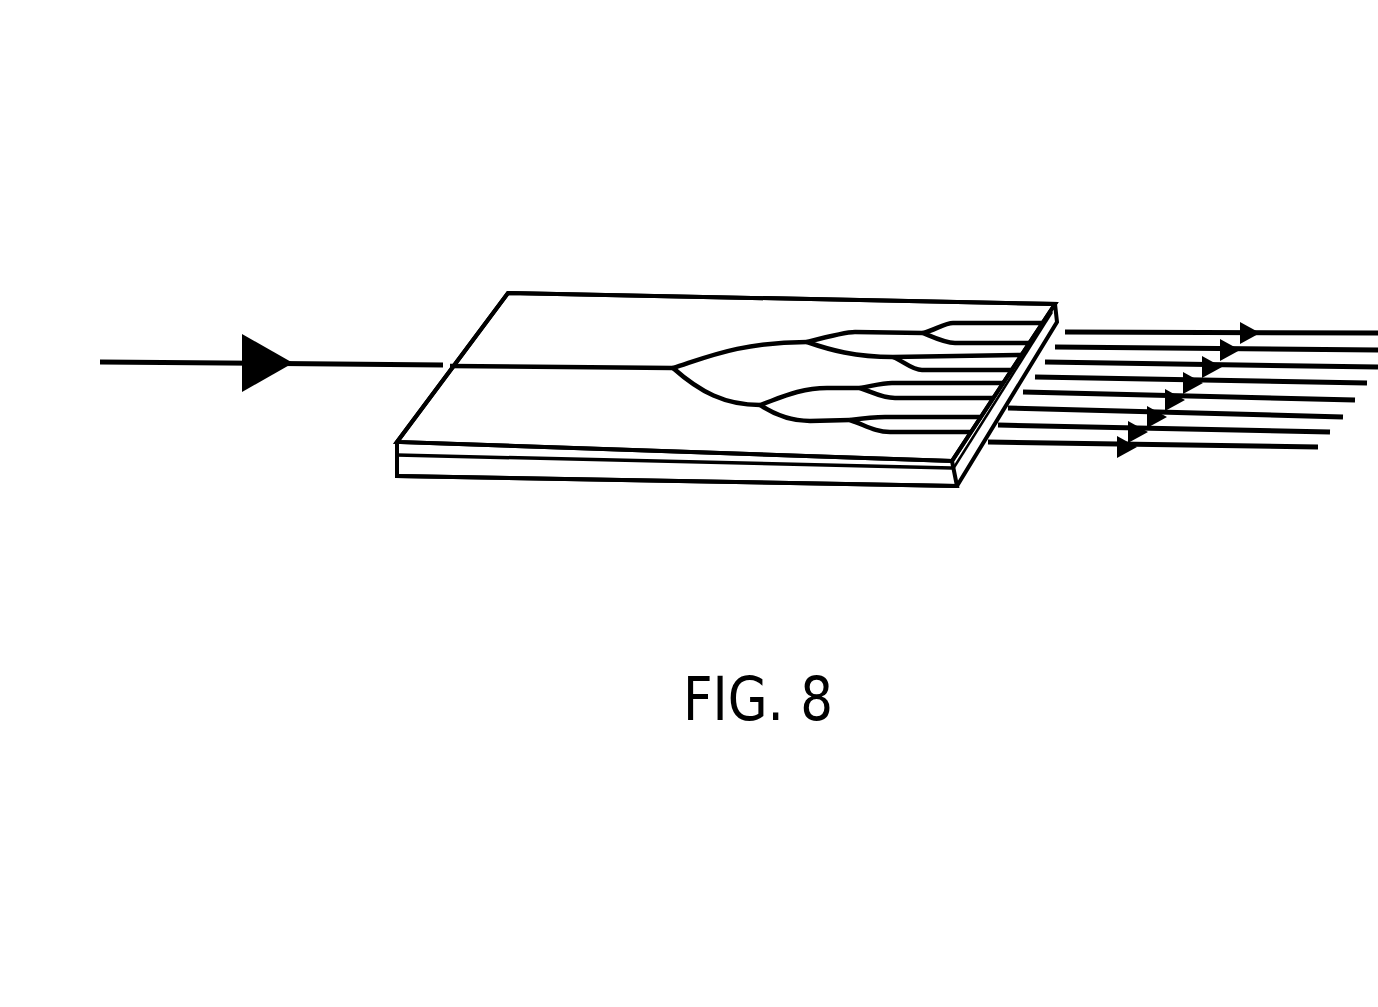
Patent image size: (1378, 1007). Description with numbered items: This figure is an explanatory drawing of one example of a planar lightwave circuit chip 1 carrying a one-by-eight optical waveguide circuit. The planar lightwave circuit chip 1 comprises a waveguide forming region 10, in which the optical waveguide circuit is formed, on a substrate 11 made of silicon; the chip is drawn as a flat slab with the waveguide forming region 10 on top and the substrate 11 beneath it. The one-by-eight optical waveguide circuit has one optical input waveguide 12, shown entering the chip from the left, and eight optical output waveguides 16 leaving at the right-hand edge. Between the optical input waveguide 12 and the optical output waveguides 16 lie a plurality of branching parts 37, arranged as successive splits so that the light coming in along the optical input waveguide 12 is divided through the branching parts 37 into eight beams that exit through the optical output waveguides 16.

The planar lightwave circuit chip 1 is at (648, 462).
The waveguide forming region 10 is at (607, 310).
The substrate 11 is at (540, 466).
The optical input waveguide 12 is at (551, 365).
The optical output waveguides 16 is at (981, 342).
The branching parts 37 is at (673, 366).